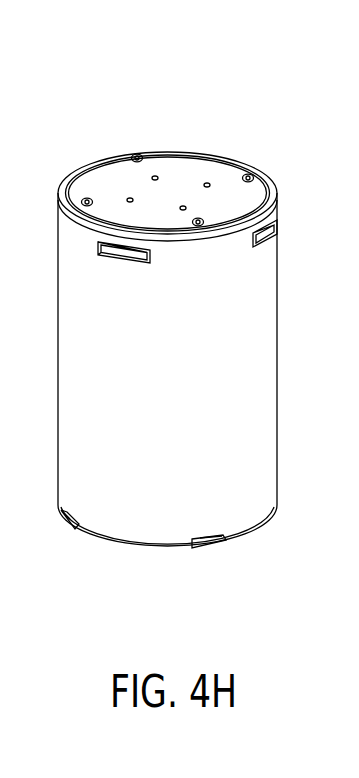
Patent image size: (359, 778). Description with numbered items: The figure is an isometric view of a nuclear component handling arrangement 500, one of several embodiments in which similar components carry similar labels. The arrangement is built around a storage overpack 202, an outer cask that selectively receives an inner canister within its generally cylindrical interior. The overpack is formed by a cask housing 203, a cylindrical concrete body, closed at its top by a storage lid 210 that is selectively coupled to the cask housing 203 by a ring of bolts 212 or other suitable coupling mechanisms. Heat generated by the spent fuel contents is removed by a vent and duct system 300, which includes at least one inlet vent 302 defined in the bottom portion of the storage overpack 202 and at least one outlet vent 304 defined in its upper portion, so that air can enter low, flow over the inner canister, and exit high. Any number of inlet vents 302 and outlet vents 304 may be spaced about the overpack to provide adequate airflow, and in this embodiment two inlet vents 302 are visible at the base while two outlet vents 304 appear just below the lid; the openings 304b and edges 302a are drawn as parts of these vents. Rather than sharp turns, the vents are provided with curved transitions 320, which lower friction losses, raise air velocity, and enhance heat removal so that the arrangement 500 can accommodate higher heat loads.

The nuclear component handling arrangement 500 is at (175, 339).
The storage overpack 202 is at (41, 172).
The storage lid 210 is at (113, 178).
The bolts 212 is at (136, 154).
The outlet vent 304 is at (76, 226).
The slots 304b is at (98, 252).
The cask housing 203 is at (73, 308).
The inlet vent 302 is at (66, 544).
The tab edges 302a is at (62, 514).
The vent and duct system 300 is at (190, 565).
The curved transitions 320 is at (0, 575).